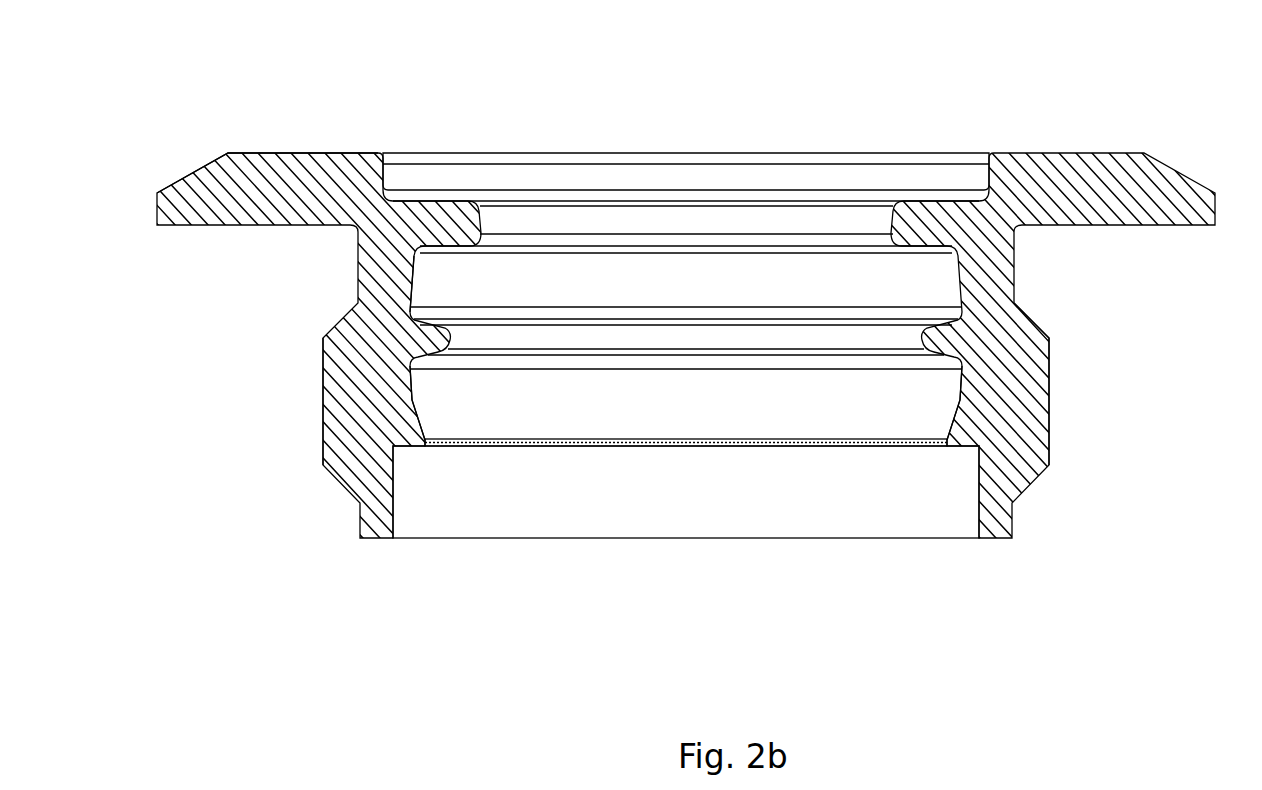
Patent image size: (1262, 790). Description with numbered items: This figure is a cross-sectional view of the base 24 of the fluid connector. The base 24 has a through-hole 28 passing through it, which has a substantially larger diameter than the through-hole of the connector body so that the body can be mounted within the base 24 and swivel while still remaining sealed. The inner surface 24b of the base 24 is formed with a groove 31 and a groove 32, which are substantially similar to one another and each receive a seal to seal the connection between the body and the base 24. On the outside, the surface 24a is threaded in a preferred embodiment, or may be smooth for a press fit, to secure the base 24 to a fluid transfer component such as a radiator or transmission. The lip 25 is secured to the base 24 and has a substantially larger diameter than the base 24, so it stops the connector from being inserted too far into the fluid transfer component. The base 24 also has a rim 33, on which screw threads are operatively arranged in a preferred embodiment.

The base 24 is at (1017, 290).
The surface 24a is at (323, 442).
The surface 24b is at (977, 405).
The lip 25 is at (188, 165).
The through-hole 28 is at (537, 225).
The groove 31 is at (407, 280).
The groove 32 is at (407, 402).
The rim 33 is at (1045, 329).